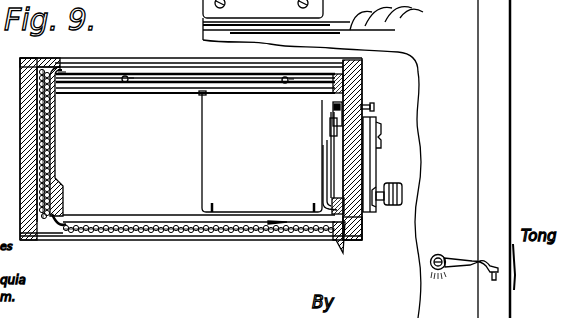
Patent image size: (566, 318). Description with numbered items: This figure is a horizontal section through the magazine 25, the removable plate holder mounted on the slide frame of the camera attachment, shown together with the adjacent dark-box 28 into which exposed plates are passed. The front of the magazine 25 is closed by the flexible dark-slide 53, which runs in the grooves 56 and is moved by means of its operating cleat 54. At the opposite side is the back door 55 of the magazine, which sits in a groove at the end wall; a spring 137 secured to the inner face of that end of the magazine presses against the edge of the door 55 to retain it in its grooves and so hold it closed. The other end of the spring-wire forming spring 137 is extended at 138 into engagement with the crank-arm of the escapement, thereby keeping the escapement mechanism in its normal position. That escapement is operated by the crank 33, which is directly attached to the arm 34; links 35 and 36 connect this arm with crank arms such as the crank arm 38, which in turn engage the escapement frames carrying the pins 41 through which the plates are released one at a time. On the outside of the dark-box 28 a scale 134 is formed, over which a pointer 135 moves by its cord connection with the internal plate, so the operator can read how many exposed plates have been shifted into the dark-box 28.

The dark-box 28 is at (430, 53).
The grooves 56 is at (132, 70).
The pins 41 is at (125, 82).
The crank arm 38 is at (203, 182).
The extension of spring-wire 138 is at (336, 158).
The link 36 is at (337, 170).
The arm 34 is at (340, 107).
The spring 137 is at (337, 207).
The link 35 is at (363, 108).
The crank 33 is at (376, 170).
The back door 55 is at (117, 222).
The flexible dark-slide 53 is at (63, 233).
The magazine 25 is at (38, 238).
The operating cleat 54 is at (340, 240).
The scale 134 is at (512, 306).
The pointer 135 is at (512, 266).